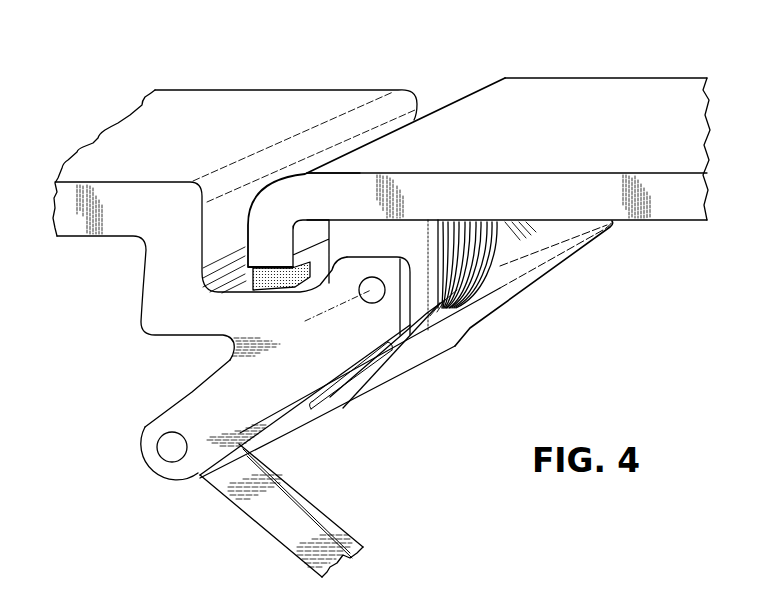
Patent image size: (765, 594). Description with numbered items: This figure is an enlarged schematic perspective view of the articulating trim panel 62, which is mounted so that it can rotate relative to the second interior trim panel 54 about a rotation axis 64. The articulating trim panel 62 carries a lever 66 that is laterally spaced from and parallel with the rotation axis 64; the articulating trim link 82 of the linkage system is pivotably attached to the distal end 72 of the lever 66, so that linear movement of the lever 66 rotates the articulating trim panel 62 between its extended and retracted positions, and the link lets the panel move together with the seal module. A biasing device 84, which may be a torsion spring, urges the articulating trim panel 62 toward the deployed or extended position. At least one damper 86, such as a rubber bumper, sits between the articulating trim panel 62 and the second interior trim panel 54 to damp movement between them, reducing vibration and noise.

The second interior trim panel 54 is at (583, 107).
The articulating trim panel 62 is at (183, 120).
The rotation axis 64 is at (307, 317).
The lever 66 is at (192, 396).
The distal end 72 is at (157, 484).
The articulating trim link 82 is at (318, 507).
The biasing device 84 is at (512, 232).
The damper 86 is at (250, 293).